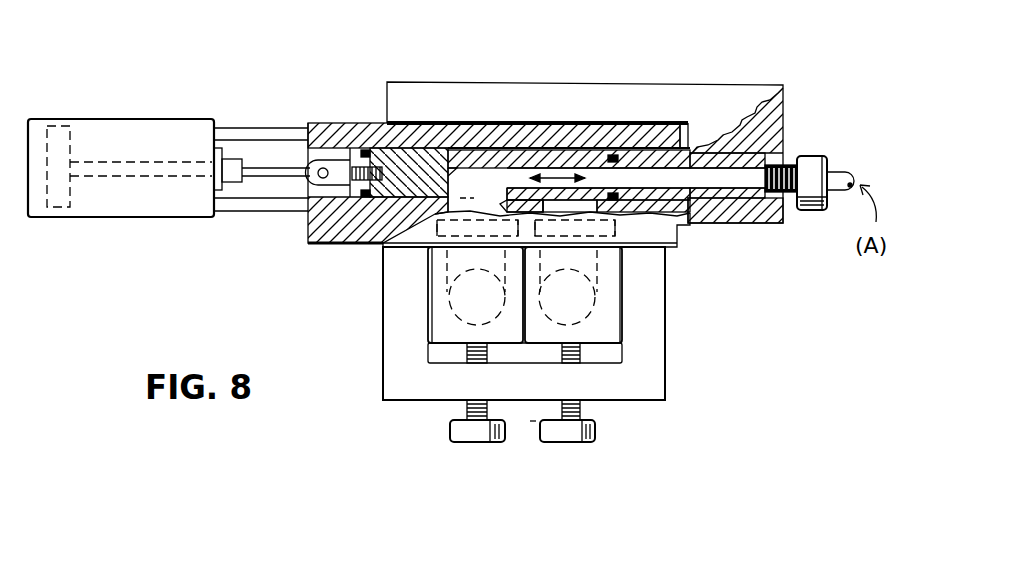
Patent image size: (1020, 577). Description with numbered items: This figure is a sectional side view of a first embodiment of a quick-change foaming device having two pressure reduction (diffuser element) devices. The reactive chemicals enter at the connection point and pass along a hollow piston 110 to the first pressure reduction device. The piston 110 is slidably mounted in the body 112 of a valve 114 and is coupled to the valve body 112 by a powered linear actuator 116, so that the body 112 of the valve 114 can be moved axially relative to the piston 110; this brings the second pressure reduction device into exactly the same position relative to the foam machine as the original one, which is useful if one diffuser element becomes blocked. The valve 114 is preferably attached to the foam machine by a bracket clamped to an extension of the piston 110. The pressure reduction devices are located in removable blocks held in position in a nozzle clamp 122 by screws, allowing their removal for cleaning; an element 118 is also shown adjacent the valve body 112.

The hollow piston 110 is at (740, 180).
The valve body 112 is at (437, 133).
The valve 114 is at (657, 232).
The powered linear actuator 116 is at (112, 194).
The top plate 118 is at (680, 105).
The nozzle clamp 122 is at (655, 348).